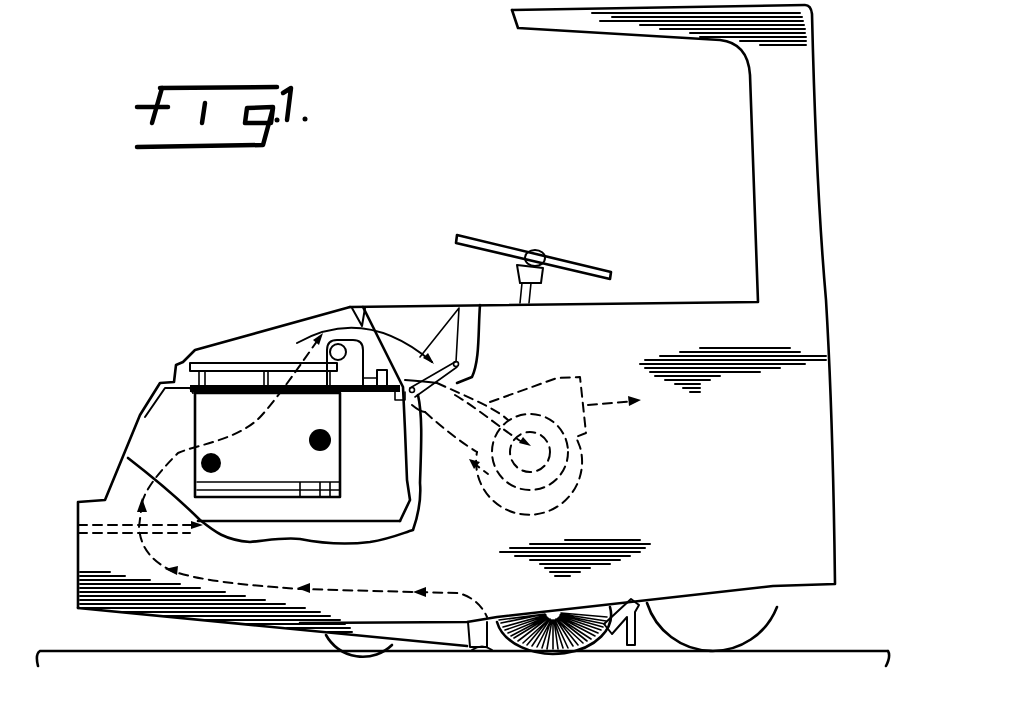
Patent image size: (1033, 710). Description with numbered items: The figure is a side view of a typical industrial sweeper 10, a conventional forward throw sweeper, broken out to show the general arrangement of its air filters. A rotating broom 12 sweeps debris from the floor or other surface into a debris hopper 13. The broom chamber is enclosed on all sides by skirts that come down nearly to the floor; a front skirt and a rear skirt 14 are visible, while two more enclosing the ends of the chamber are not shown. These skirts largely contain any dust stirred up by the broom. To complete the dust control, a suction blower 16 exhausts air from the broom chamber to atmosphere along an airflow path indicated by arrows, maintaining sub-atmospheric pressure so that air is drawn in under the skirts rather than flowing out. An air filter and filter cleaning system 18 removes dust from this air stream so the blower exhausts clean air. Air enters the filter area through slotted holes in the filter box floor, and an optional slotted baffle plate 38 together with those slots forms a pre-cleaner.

The industrial sweeper 10 is at (846, 230).
The rotating broom 12 is at (553, 652).
The debris hopper 13 is at (130, 612).
The front skirt and rear skirt 14 is at (478, 648).
The suction blower 16 is at (563, 375).
The air filter and filter cleaning system 18 is at (291, 345).
The slotted baffle plate 38 is at (137, 532).